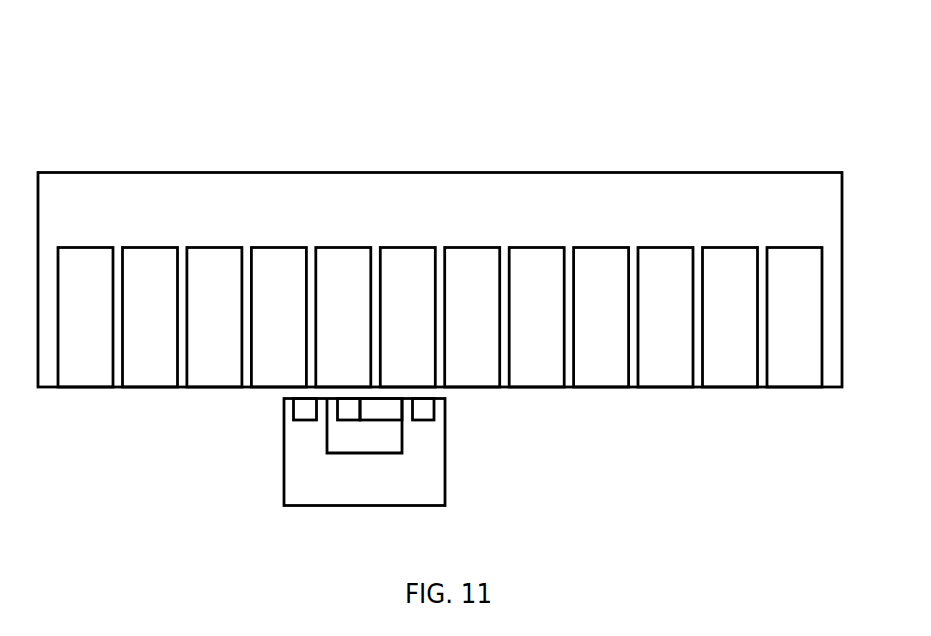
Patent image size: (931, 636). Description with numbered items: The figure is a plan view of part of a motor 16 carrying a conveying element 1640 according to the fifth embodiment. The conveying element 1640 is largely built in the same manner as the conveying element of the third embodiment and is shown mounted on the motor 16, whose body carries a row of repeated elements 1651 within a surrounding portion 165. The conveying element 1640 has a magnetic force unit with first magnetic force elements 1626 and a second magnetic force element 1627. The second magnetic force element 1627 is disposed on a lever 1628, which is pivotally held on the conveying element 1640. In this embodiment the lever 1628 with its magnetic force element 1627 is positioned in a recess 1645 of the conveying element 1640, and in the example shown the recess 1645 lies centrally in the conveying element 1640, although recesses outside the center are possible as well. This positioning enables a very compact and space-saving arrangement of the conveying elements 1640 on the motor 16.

The motor 16 is at (817, 69).
The circuit board 165 is at (760, 183).
The light-emitting elements 1651 is at (719, 370).
The conveying element 1640 is at (298, 465).
The recess 1645 is at (393, 435).
The first magnetic force element 1626 is at (296, 408).
The second magnetic force element 1627 is at (348, 410).
The lever 1628 is at (382, 413).